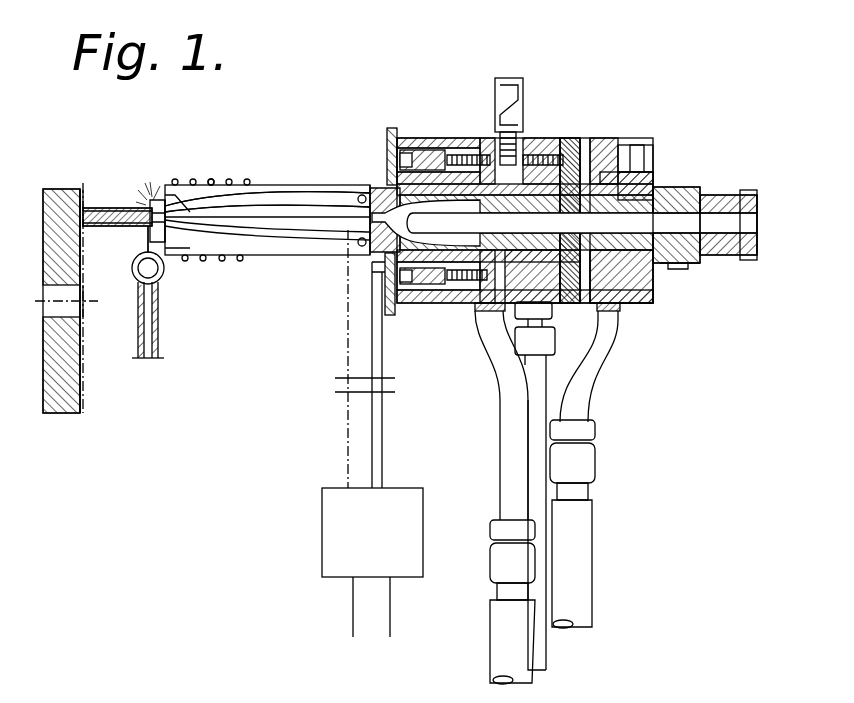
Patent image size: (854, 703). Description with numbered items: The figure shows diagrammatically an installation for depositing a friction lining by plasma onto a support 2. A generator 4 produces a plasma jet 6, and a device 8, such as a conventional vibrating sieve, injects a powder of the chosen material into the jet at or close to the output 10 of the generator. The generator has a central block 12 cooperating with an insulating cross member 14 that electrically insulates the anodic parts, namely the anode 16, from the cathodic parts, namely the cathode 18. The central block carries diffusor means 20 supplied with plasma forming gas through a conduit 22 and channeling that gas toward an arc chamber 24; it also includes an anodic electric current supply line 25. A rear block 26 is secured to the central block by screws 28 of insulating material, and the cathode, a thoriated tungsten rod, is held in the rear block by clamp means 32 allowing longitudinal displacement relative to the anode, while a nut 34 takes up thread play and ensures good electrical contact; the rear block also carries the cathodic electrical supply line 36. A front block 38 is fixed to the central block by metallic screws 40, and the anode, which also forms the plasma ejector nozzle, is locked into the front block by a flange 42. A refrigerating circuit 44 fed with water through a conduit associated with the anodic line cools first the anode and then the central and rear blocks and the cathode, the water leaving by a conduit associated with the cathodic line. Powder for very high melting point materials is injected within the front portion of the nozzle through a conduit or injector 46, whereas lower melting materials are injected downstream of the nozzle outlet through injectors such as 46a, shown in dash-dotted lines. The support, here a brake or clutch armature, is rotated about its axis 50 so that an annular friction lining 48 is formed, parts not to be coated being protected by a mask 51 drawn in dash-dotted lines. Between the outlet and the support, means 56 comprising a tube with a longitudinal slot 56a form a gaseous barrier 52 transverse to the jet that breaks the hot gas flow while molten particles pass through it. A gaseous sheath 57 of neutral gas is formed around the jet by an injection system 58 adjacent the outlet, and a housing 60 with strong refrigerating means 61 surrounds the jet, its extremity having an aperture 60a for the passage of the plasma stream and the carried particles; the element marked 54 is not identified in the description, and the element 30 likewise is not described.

The support 2 is at (70, 262).
The generator 4 is at (643, 138).
The plasma jet 6 is at (218, 220).
The device for injecting a powder 8 is at (380, 542).
The output of the generator 10 is at (366, 226).
The central block 12 is at (517, 150).
The insulating cross member 14 is at (596, 152).
The anode 16 is at (425, 220).
The cathode 18 is at (637, 214).
The diffusor means 20 is at (507, 168).
The conduit 22 is at (540, 370).
The arc chamber 24 is at (430, 290).
The anodic electric current supply line 25 is at (500, 365).
The rear block 26 is at (640, 285).
The screws 28 is at (650, 148).
The nut 30 is at (746, 195).
The clamp means 32 is at (700, 190).
The nut 34 is at (703, 266).
The cathodic electrical supply line 36 is at (615, 330).
The front block 38 is at (422, 143).
The metallic screws 40 is at (452, 158).
The flange 42 is at (390, 160).
The refrigerating circuit 44 is at (590, 158).
The injector 46 is at (383, 270).
The injector 46a is at (350, 345).
The annular friction lining 48 is at (85, 396).
The axis 50 is at (93, 303).
The mask 51 is at (92, 191).
The gaseous barrier 52 is at (150, 236).
The nozzle end 54 is at (170, 215).
The means adapted to form the gaseous barrier 56 is at (163, 283).
The slot 56a is at (160, 268).
The gaseous sheath 57 is at (262, 200).
The injection system 58 is at (360, 194).
The housing 60 is at (242, 258).
The aperture 60a is at (150, 195).
The refrigerating means 61 is at (212, 178).